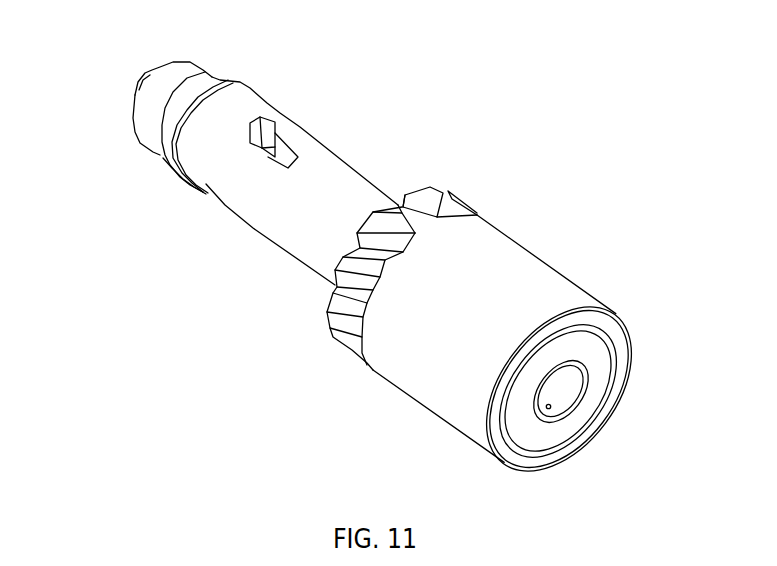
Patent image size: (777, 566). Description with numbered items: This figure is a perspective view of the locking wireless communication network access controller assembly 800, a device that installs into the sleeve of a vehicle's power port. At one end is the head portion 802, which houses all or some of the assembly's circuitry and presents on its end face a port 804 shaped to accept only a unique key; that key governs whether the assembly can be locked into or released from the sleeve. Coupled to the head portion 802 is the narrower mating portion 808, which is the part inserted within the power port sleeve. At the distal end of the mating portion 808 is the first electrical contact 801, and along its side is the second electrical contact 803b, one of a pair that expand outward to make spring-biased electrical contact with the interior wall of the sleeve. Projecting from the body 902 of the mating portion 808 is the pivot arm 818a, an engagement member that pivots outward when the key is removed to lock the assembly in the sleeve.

The wireless communication network access controller assembly 800 is at (404, 493).
The first electrical contact 801 is at (122, 99).
The head portion 802 is at (587, 238).
The second electrical contact 803b is at (133, 142).
The port 804 is at (567, 392).
The mating portion 808 is at (351, 122).
The pivot arm 818a is at (270, 130).
The body 902 is at (300, 238).